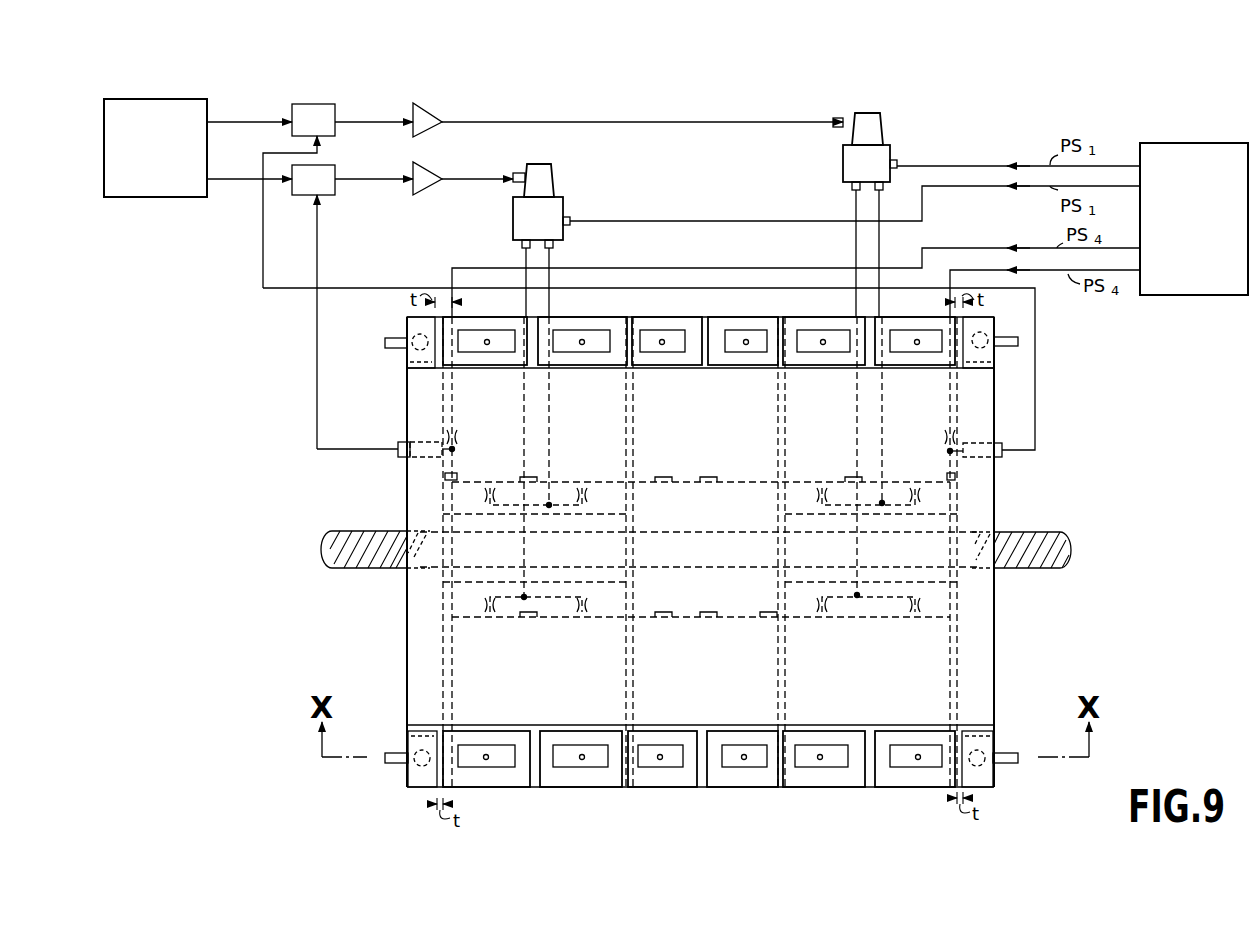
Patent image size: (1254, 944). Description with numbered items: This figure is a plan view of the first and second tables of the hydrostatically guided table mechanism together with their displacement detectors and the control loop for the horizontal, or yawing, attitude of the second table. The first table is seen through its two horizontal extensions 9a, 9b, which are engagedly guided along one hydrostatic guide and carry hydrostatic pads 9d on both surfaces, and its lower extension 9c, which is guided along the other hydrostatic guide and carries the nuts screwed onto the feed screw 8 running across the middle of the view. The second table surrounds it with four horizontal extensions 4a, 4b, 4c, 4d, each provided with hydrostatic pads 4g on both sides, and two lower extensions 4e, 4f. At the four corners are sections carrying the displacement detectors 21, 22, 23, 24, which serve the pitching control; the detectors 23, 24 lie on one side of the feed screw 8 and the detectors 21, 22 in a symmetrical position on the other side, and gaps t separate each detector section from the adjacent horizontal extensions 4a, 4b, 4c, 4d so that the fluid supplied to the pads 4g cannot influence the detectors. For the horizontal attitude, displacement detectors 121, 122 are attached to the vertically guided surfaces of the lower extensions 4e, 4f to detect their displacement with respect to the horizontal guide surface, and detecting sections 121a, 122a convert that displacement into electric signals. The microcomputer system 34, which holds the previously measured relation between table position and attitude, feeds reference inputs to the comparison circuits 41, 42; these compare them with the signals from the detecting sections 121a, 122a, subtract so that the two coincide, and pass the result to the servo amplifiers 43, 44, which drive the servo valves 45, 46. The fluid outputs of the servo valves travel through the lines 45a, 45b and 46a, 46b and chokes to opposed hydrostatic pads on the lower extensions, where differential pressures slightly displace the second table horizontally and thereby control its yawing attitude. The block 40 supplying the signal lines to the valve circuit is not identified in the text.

The microcomputer system 34 is at (175, 197).
The position sensor signal processor 40 is at (1210, 126).
The comparison circuit 41 is at (335, 110).
The comparison circuit 42 is at (335, 185).
The servo amplifier 43 is at (430, 110).
The servo amplifier 44 is at (430, 169).
The servo valve 45 is at (890, 150).
The servo valve 46 is at (563, 207).
The line 45a is at (883, 407).
The line 45b is at (857, 417).
The line 46a is at (549, 428).
The line 46b is at (523, 427).
The horizontal extension 4a is at (825, 317).
The horizontal extension 4b is at (487, 315).
The horizontal extension 4c is at (888, 787).
The horizontal extension 4d is at (550, 787).
The lower extension 4e is at (940, 504).
The lower extension 4f is at (458, 495).
The hydrostatic pad 4g is at (592, 340).
The feed screw 8 is at (1038, 532).
The horizontal extension 9a is at (712, 318).
The horizontal extension 9b is at (728, 787).
The lower extension 9c is at (692, 598).
The hydrostatic pad 9d is at (733, 339).
The displacement detector 21 is at (983, 340).
The displacement detector 22 is at (417, 336).
The displacement detector 23 is at (983, 765).
The displacement detector 24 is at (420, 765).
The displacement detector 121 is at (955, 478).
The detecting section 121a is at (985, 443).
The displacement detector 122 is at (445, 476).
The detecting section 122a is at (424, 442).